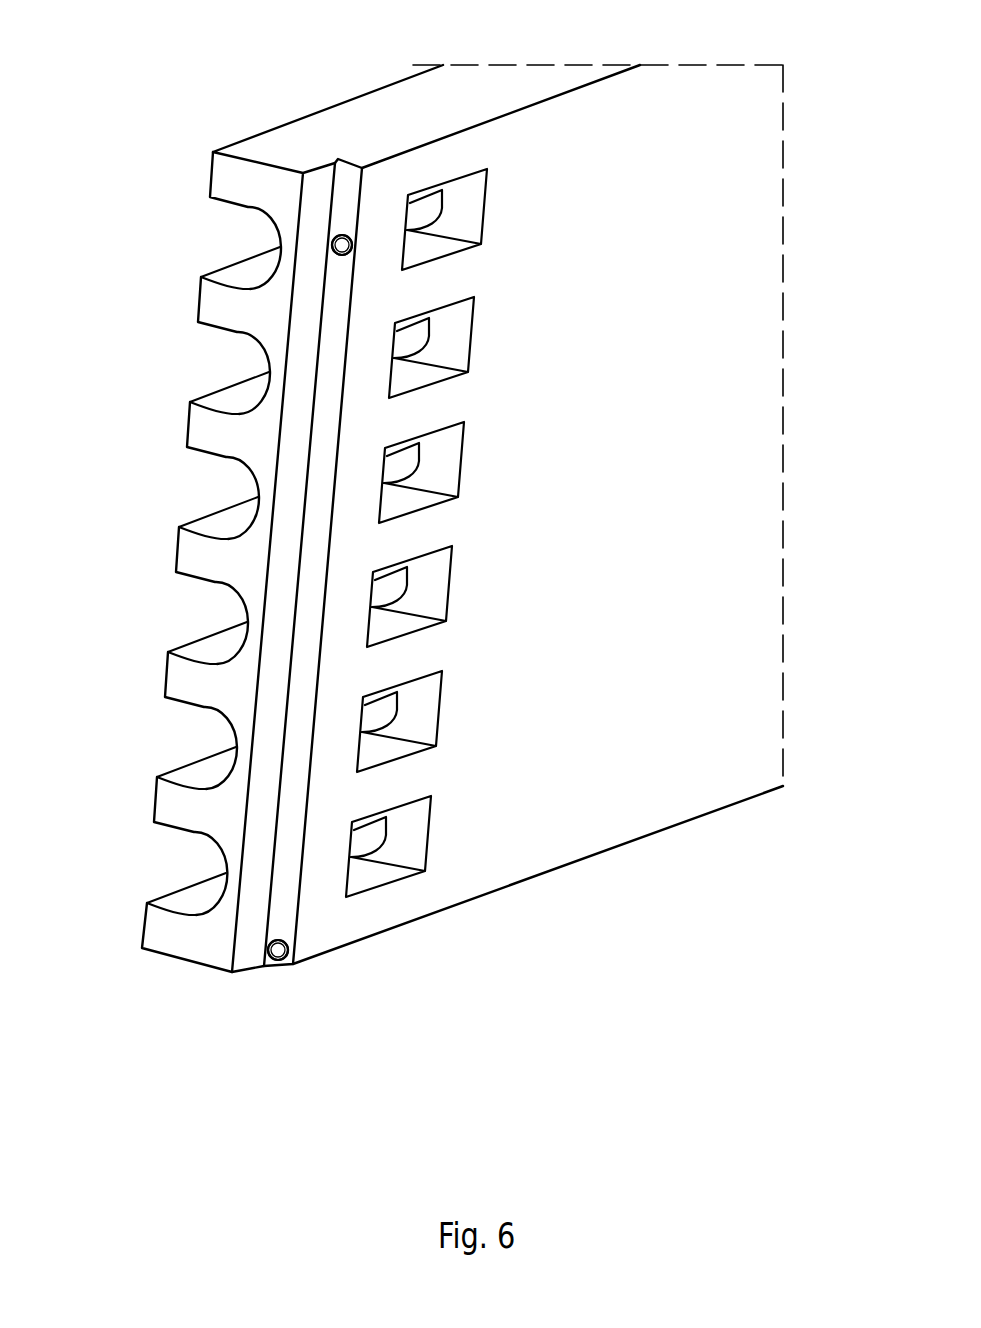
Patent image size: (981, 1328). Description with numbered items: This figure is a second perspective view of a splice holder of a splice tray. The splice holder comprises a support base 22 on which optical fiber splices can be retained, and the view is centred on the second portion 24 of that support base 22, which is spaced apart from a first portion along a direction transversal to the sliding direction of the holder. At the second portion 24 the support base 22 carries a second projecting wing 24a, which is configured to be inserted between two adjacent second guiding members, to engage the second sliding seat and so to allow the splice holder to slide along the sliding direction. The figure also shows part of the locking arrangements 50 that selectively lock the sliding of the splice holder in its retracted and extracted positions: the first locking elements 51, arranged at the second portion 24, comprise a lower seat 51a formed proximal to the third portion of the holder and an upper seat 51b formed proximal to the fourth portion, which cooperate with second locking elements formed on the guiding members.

The support base 22 is at (730, 553).
The second portion 24 is at (310, 607).
The second projecting wing 24a is at (250, 182).
The locking arrangements 50 is at (362, 242).
The first locking elements 51 is at (330, 267).
The lower seats 51a is at (272, 940).
The upper seats 51b is at (345, 257).